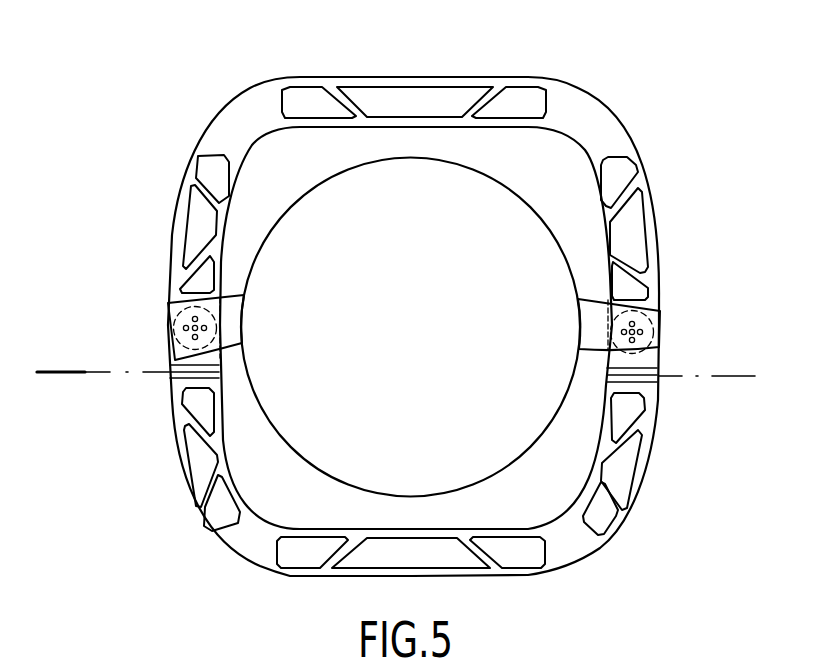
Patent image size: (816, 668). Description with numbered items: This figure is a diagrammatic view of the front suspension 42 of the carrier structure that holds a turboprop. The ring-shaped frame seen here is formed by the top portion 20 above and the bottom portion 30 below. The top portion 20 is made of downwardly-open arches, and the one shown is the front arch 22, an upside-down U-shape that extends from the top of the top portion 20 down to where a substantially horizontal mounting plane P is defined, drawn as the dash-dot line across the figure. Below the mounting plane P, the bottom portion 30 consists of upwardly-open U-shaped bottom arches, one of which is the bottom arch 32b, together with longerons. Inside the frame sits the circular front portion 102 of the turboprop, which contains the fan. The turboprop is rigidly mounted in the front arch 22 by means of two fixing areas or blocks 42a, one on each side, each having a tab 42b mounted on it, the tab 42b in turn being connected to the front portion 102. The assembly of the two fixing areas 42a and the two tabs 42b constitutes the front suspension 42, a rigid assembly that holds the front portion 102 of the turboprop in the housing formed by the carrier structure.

The top portion 20 is at (623, 88).
The front arch 22 is at (243, 111).
The bottom portion 30 is at (595, 565).
The bottom arch 32b is at (239, 547).
The front suspension 42 is at (660, 312).
The fixing area 42a is at (657, 320).
The tab 42b is at (595, 336).
The front portion 102 is at (429, 348).
The mounting plane P is at (66, 371).